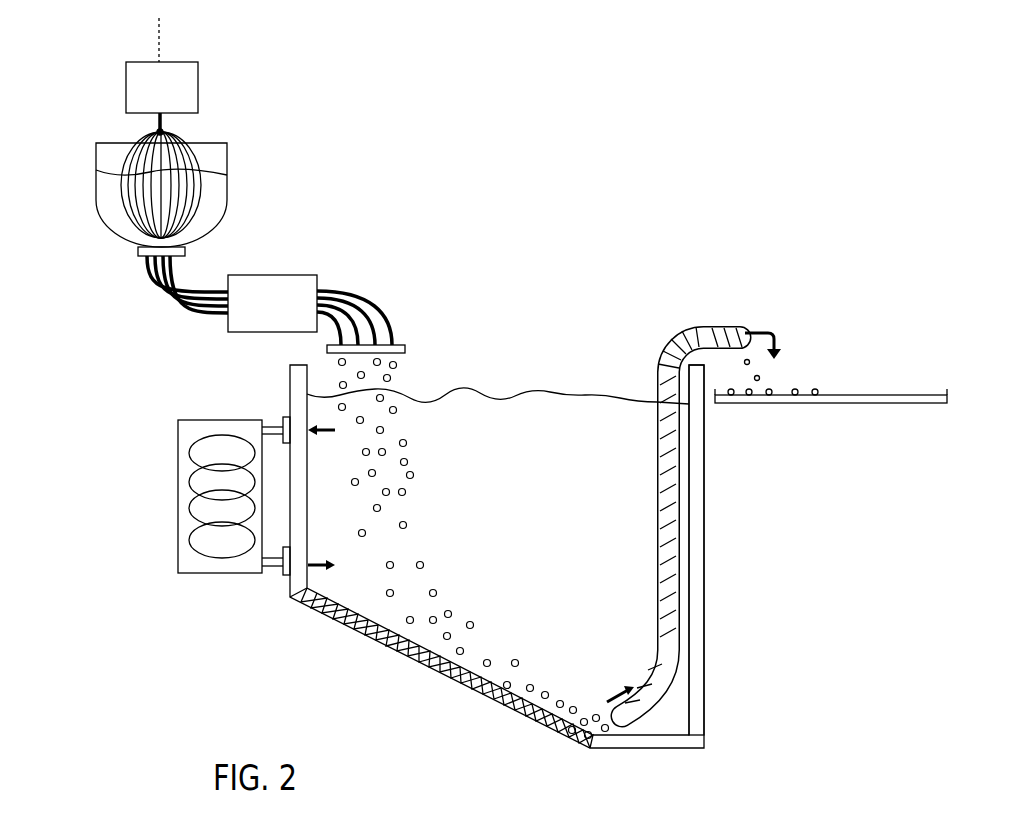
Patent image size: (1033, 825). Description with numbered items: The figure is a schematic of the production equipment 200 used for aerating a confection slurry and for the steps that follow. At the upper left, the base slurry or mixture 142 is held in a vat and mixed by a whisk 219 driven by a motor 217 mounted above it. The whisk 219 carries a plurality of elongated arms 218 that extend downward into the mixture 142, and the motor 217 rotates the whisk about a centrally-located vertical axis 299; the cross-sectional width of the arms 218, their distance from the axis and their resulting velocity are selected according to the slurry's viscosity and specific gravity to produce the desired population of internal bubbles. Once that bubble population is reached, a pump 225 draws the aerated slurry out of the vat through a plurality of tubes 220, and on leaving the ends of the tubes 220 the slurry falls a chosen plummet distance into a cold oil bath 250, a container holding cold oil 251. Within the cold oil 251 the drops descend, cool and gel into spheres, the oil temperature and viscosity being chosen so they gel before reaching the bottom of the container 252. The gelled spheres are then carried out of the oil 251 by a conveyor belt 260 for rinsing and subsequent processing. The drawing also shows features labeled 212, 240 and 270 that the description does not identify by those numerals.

The vertical axis 299 is at (160, 42).
The motor 217 is at (162, 97).
The elongated arms 218 is at (150, 135).
The whisk 219 is at (120, 185).
The mixing bowl 212 is at (96, 210).
The cold oil 251 is at (227, 185).
The base slurry 142 is at (213, 208).
The tubes 220 is at (152, 282).
The pump 225 is at (272, 303).
The equipment 200 is at (528, 303).
The cold oil bath 250 is at (577, 378).
The bottom of the container 252 is at (706, 458).
The collection tray 270 is at (853, 403).
The transducer 240 is at (178, 532).
The conveyor belt 260 is at (680, 680).